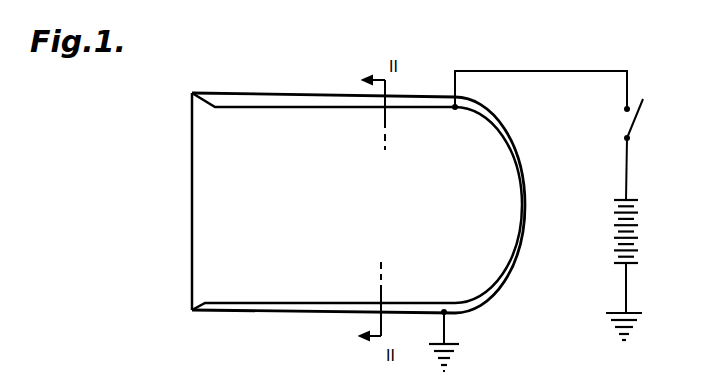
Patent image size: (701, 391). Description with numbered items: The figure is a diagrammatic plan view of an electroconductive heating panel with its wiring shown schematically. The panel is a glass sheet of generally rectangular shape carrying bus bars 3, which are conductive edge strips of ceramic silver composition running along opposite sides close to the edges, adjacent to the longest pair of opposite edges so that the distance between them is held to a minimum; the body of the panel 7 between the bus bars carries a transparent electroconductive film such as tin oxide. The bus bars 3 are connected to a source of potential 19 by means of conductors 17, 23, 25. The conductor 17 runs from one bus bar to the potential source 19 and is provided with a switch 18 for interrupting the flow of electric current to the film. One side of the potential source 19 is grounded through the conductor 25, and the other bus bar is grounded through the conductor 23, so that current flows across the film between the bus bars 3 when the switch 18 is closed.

The bus bars 3 is at (224, 95).
The tube body / interior 7 is at (207, 208).
The conductor 17 is at (554, 49).
The switch 18 is at (645, 115).
The source of potential 19 is at (640, 250).
The conductor 23 is at (446, 330).
The conductor 25 is at (628, 290).